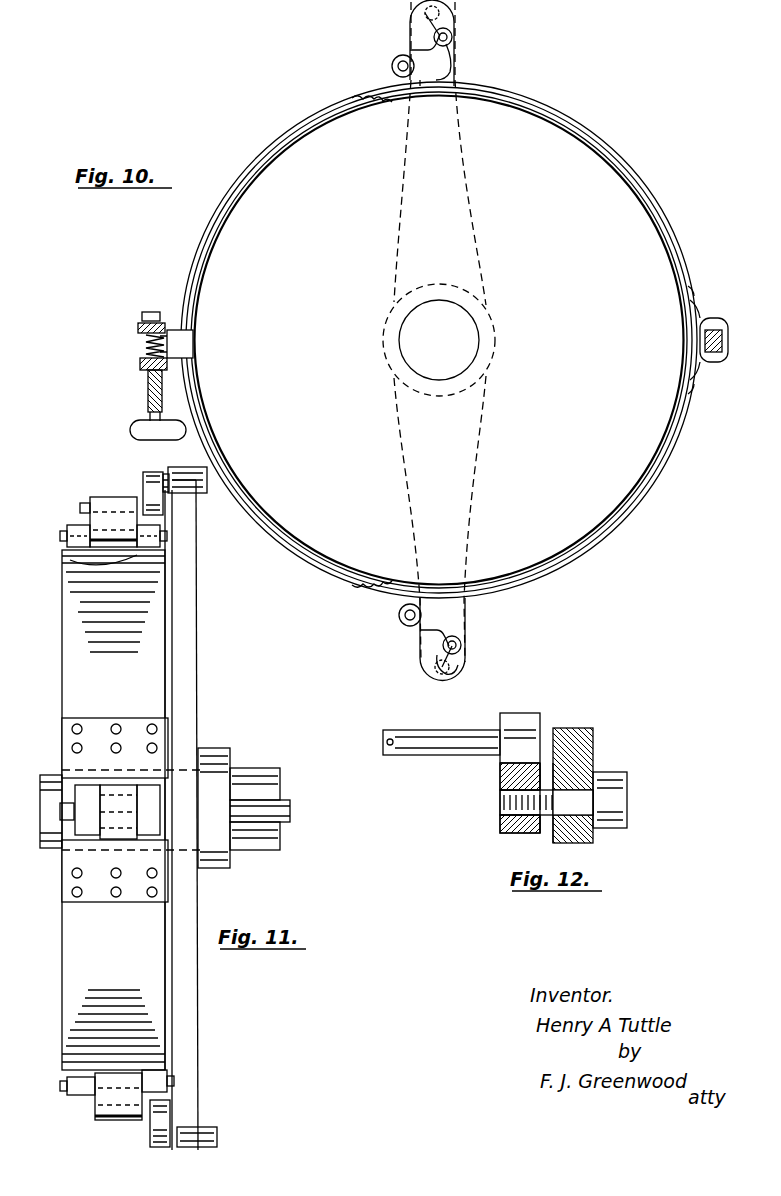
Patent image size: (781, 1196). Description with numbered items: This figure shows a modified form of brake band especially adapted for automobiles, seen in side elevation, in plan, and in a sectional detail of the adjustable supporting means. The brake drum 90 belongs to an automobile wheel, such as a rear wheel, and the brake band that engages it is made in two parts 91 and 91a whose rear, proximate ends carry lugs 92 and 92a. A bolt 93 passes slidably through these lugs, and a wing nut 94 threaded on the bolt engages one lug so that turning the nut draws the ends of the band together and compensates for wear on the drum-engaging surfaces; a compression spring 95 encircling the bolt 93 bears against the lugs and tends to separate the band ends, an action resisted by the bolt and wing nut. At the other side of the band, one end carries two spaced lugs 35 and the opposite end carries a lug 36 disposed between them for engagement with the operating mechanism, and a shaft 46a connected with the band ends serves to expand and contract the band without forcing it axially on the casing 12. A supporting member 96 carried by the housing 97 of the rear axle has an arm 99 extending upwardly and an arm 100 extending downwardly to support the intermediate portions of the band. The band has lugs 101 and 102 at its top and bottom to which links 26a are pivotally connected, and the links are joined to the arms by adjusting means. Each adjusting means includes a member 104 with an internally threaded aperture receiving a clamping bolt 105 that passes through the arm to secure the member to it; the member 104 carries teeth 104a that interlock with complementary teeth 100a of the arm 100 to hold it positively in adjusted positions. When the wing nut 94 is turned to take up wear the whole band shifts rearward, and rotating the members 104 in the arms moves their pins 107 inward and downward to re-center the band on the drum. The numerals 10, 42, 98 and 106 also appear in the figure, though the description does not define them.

In FIG. 11, the ring body 10 is at (88, 1115).
In FIG. 10, the casing 12 is at (460, 640).
In FIG. 10, the links 26a is at (445, 62).
In FIG. 11, the links 26a is at (110, 516).
In FIG. 10, the spaced lugs 35 is at (706, 326).
In FIG. 10, the lug 36 is at (708, 316).
In FIG. 10, the clamp housing 42 is at (722, 322).
In FIG. 10, the shaft 46a is at (729, 344).
In FIG. 11, the shaft 46a is at (248, 805).
In FIG. 10, the brake drum 90 is at (196, 343).
In FIG. 11, the brake drum 90 is at (170, 600).
In FIG. 10, the brake band part 91 is at (333, 110).
In FIG. 10, the brake band part 91a is at (331, 593).
In FIG. 10, the lug 92 is at (138, 327).
In FIG. 10, the lug 92a is at (140, 363).
In FIG. 10, the bolt 93 is at (150, 312).
In FIG. 10, the wing nut 94 is at (130, 430).
In FIG. 10, the compression spring 95 is at (145, 343).
In FIG. 10, the supporting member 96 is at (384, 322).
In FIG. 11, the supporting member 96 is at (205, 728).
In FIG. 10, the housing 97 is at (439, 340).
In FIG. 10, the disc surface 98 is at (641, 368).
In FIG. 10, the arm 99 is at (465, 200).
In FIG. 11, the arm 99 is at (197, 646).
In FIG. 10, the arm 100 is at (468, 512).
In FIG. 11, the arm 100 is at (200, 1008).
In FIG. 12, the arm 100 is at (586, 728).
In FIG. 11, the interlocking members or teeth 100a is at (205, 500).
In FIG. 12, the interlocking members or teeth 100a is at (548, 760).
In FIG. 10, the lug 101 is at (392, 64).
In FIG. 11, the lug 101 is at (70, 528).
In FIG. 10, the lug 102 is at (398, 616).
In FIG. 11, the lug 102 is at (72, 1098).
In FIG. 10, the member 104 is at (450, 22).
In FIG. 11, the member 104 is at (150, 472).
In FIG. 12, the member 104 is at (500, 780).
In FIG. 11, the interlocking members or teeth 104a is at (176, 467).
In FIG. 12, the interlocking members or teeth 104a is at (546, 834).
In FIG. 10, the clamping bolt 105 is at (424, 13).
In FIG. 11, the clamping bolt 105 is at (182, 492).
In FIG. 12, the clamping bolt 105 is at (500, 805).
In FIG. 12, the nut 106 is at (618, 822).
In FIG. 10, the pins 107 is at (452, 37).
In FIG. 11, the pins 107 is at (82, 503).
In FIG. 12, the pins 107 is at (424, 730).